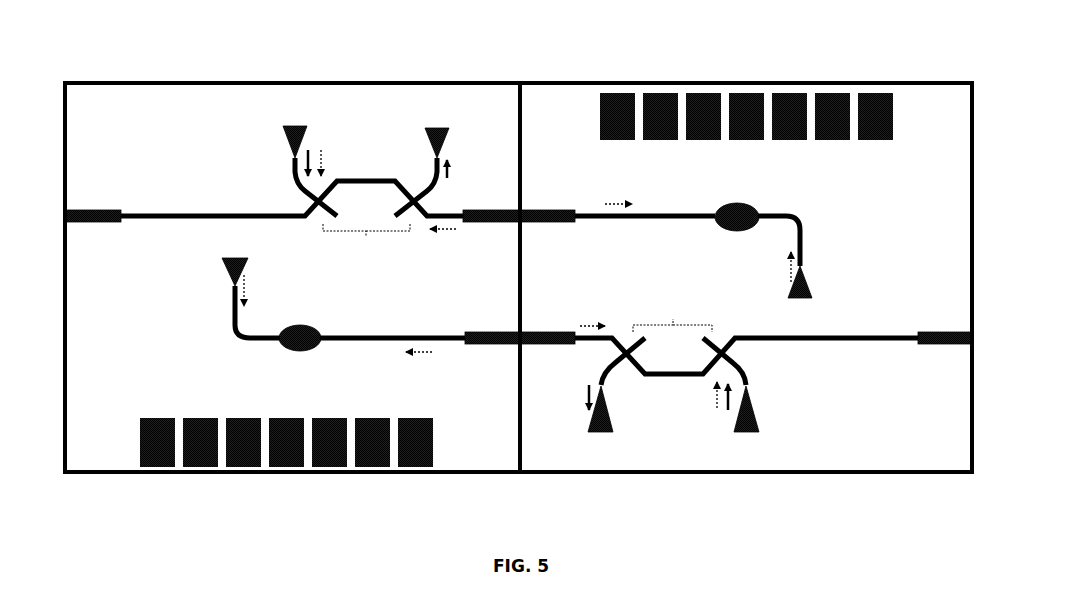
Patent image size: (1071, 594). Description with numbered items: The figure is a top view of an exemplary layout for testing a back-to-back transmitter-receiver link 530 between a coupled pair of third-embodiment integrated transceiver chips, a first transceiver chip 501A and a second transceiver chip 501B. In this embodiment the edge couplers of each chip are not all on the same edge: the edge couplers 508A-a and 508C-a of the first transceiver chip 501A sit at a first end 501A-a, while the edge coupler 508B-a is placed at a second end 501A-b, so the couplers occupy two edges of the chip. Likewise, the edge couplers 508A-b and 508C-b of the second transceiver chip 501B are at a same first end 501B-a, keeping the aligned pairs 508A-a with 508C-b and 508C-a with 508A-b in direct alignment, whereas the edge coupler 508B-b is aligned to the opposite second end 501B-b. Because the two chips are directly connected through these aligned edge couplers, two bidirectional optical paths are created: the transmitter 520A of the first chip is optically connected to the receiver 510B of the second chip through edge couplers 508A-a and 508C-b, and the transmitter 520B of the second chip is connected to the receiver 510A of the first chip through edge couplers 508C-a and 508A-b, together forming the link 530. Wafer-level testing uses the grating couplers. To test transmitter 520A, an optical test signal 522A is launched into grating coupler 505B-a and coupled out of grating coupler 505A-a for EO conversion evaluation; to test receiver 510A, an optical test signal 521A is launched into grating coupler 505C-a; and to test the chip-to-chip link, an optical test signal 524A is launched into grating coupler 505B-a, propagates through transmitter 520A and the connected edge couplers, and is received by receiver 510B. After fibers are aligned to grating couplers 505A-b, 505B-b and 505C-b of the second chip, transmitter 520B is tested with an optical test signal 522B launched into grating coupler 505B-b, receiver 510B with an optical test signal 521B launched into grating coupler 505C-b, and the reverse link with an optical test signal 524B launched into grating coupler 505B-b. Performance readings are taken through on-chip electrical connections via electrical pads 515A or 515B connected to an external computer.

The transmitter-receiver link 530 is at (878, 60).
The first transceiver chip 501A is at (292, 277).
The second transceiver chip 501B is at (746, 277).
The first end of first transceiver chip 501A-a is at (499, 494).
The second end of first transceiver chip 501A-b is at (73, 494).
The first end of second transceiver chip 501B-a is at (536, 494).
The second end of second transceiver chip 501B-b is at (961, 494).
The grating coupler 505A-a is at (437, 137).
The grating coupler 505B-a is at (283, 137).
The grating coupler 505C-a is at (222, 276).
The grating coupler 505A-b is at (607, 430).
The grating coupler 505B-b is at (752, 420).
The grating coupler 505C-b is at (809, 290).
The edge coupler 508A-a is at (493, 223).
The edge coupler 508B-a is at (104, 221).
The edge coupler 508C-a is at (497, 346).
The edge coupler 508A-b is at (553, 331).
The edge coupler 508B-b is at (947, 330).
The edge coupler 508C-b is at (543, 209).
The receiver 510A is at (311, 326).
The receiver 510B is at (720, 233).
The electrical pads 515A is at (436, 479).
The electrical pads 515B is at (897, 147).
The transmitter 520A is at (366, 226).
The transmitter 520B is at (672, 329).
The optical test signal 521A is at (248, 286).
The optical test signal 521B is at (788, 268).
The optical test signal 522A is at (332, 152).
The optical test signal 522B is at (726, 405).
The optical test signal 524A is at (325, 161).
The optical test signal 524B is at (422, 355).